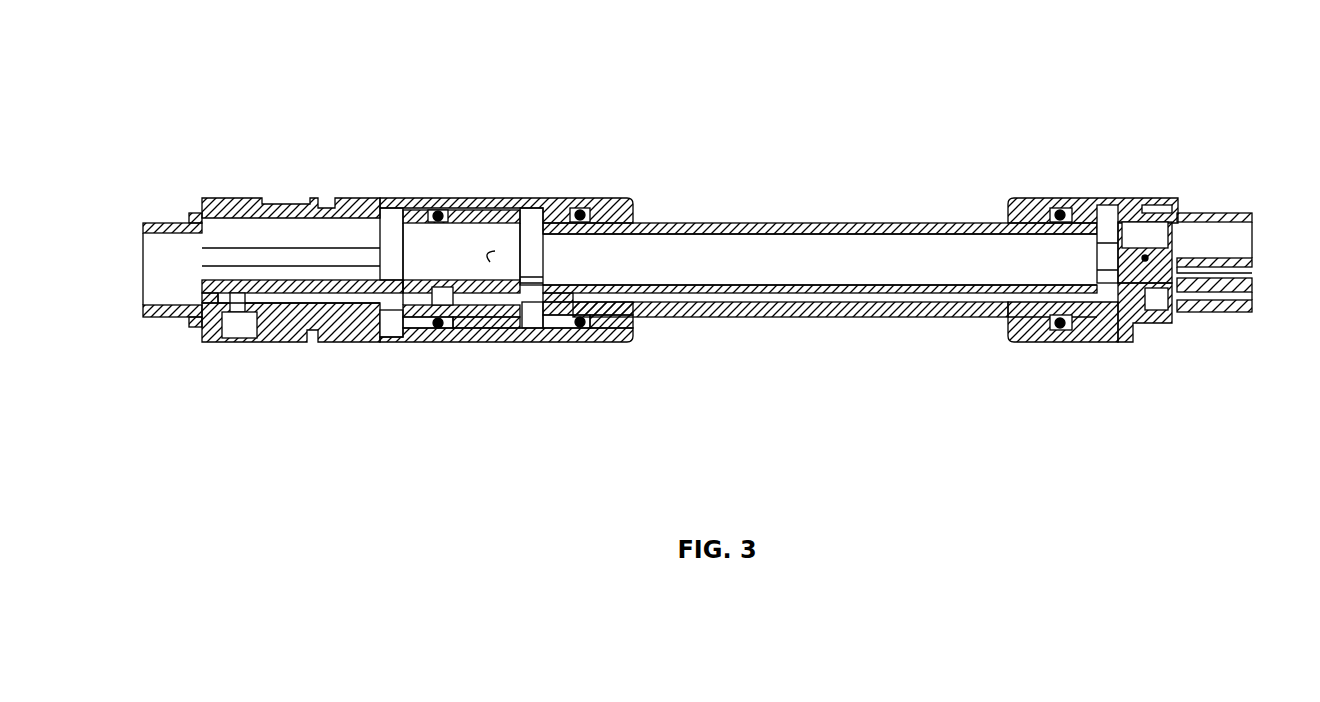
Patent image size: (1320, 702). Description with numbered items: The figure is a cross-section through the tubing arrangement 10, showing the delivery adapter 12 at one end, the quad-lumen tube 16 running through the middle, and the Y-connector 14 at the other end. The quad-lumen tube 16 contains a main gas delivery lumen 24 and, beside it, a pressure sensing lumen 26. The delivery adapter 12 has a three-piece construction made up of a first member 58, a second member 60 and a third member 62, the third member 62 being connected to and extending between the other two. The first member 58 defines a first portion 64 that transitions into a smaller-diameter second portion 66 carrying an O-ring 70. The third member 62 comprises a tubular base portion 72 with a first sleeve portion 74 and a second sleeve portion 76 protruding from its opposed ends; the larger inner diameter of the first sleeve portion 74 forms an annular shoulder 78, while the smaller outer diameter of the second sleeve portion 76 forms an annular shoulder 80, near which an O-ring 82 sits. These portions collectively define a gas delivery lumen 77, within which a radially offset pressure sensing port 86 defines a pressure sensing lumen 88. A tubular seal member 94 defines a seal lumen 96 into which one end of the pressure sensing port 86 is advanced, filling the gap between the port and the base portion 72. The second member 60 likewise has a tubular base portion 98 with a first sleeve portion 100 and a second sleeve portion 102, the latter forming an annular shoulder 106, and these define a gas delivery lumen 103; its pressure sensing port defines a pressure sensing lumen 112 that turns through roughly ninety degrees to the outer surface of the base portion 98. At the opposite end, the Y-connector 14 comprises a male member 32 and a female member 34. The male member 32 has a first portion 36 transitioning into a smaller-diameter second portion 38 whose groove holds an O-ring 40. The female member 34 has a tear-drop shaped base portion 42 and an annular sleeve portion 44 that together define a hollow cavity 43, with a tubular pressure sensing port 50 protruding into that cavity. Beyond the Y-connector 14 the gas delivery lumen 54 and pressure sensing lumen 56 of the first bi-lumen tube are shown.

The tubing arrangement 10 is at (786, 110).
The delivery adapter 12 is at (442, 265).
The Y-connector 14 is at (1194, 259).
The quad-lumen tube 16 is at (820, 263).
The main gas delivery lumen 24 is at (788, 268).
The pressure sensing lumen 26 is at (872, 300).
The male member 32 is at (1071, 278).
The female member 34 is at (1124, 354).
The first portion 36 is at (1023, 203).
The second portion 38 is at (1087, 203).
The O-ring 40 is at (1062, 207).
The base portion 42 is at (1152, 322).
The hollow cavity 43 is at (1118, 202).
The sleeve portion 44 is at (1063, 343).
The pressure sensing port 50 is at (1097, 343).
The gas delivery lumen 54 is at (1240, 237).
The pressure sensing lumen 56 is at (1240, 298).
The first member 58 is at (584, 360).
The second member 60 is at (224, 188).
The third member 62 is at (477, 360).
The first portion 64 is at (514, 292).
The second portion 66 is at (566, 328).
The O-ring 70 is at (578, 209).
The base portion 72 is at (480, 210).
The first sleeve portion 74 is at (583, 341).
The second sleeve portion 76 is at (405, 210).
The gas delivery lumen 77 is at (490, 262).
The annular shoulder 78 is at (531, 208).
The annular shoulder 80 is at (450, 340).
The O-ring 82 is at (437, 209).
The pressure sensing port 86 is at (428, 328).
The pressure sensing lumen 88 is at (527, 302).
The seal member 94 is at (388, 330).
The seal lumen 96 is at (442, 295).
The base portion 98 is at (288, 300).
The first sleeve portion 100 is at (385, 205).
The second sleeve portion 102 is at (165, 222).
The gas delivery lumen 103 is at (262, 246).
The annular shoulder 106 is at (222, 330).
The pressure sensing lumen 112 is at (320, 297).